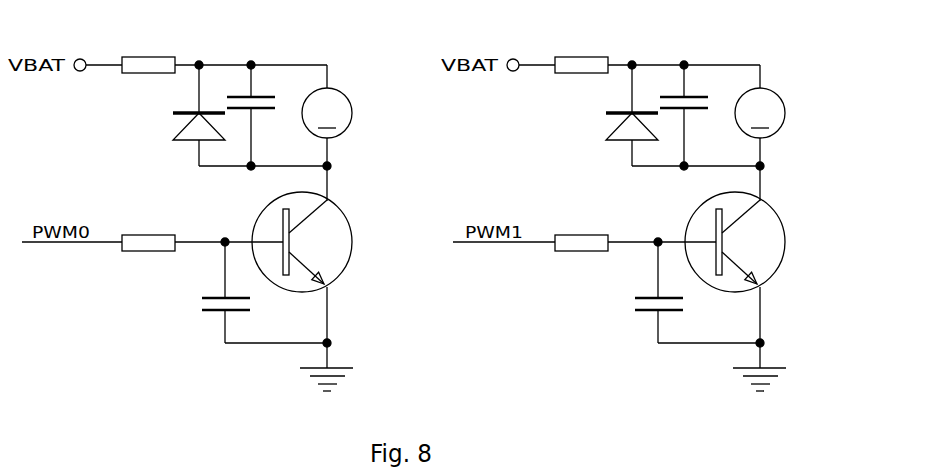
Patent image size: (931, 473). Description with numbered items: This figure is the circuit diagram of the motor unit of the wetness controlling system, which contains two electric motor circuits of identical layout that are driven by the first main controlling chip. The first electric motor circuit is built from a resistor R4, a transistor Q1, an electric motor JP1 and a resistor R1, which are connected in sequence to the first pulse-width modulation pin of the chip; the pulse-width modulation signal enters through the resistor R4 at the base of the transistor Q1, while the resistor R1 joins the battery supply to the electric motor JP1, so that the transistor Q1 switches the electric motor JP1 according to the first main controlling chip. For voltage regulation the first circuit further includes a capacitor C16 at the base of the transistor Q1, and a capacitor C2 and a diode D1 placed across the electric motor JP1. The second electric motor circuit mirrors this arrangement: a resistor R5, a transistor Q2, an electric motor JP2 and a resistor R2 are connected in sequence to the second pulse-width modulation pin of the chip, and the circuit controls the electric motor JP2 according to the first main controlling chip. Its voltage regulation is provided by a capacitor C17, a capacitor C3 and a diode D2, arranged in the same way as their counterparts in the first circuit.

The resistor R1 is at (148, 55).
The resistor R2 is at (581, 55).
The resistor R4 is at (148, 234).
The resistor R5 is at (581, 234).
The diode D1 is at (175, 115).
The diode D2 is at (608, 115).
The capacitor C2 is at (253, 115).
The capacitor C3 is at (686, 115).
The capacitor C16 is at (264, 292).
The capacitor C17 is at (697, 292).
The electric motor JP1 is at (343, 115).
The electric motor JP2 is at (776, 115).
The transistor Q1 is at (314, 242).
The transistor Q2 is at (747, 242).